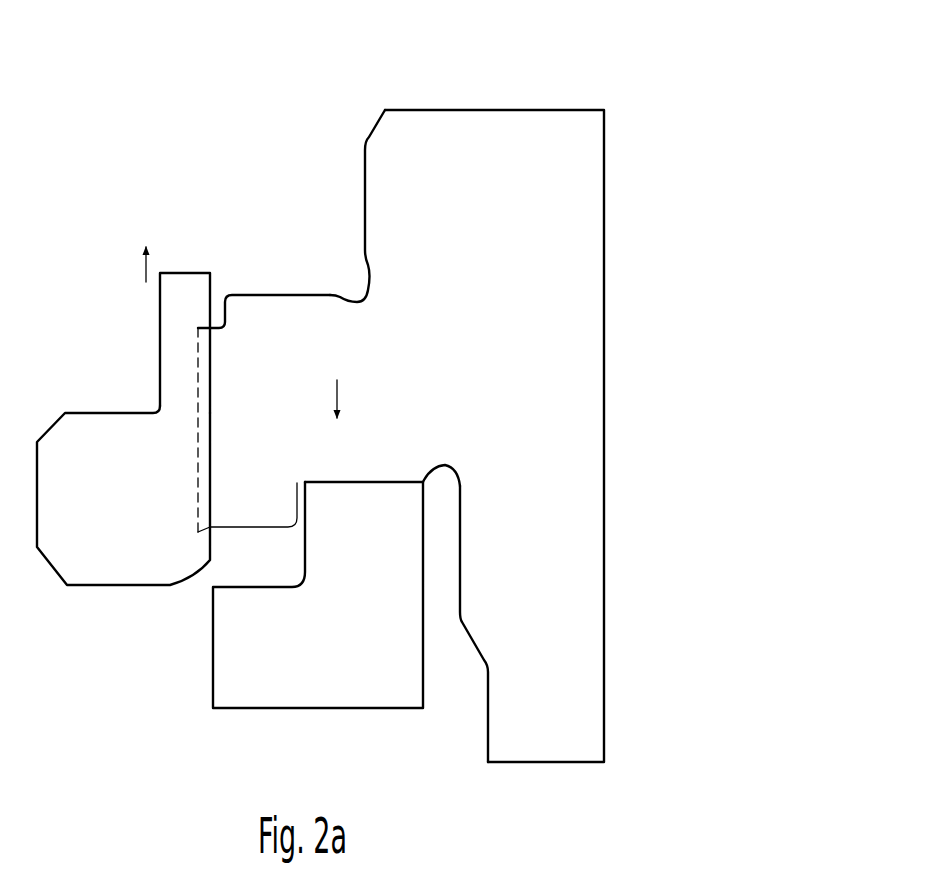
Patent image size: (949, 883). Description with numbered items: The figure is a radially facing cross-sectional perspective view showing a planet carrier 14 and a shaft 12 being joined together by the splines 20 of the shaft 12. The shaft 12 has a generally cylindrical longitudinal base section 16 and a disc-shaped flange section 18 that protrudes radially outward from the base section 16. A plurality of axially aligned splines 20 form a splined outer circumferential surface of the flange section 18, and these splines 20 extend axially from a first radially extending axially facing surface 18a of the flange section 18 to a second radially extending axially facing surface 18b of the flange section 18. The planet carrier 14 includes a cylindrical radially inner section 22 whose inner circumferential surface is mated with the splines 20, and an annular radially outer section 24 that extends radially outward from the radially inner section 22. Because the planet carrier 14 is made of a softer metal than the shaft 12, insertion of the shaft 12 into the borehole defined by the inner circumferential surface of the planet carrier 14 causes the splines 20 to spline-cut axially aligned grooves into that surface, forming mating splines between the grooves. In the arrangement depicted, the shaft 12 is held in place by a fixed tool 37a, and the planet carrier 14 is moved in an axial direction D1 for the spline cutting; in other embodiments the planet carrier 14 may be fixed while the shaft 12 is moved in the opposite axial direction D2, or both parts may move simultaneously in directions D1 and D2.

The shaft 12 is at (370, 403).
The planet carrier 14 is at (123, 485).
The longitudinal base section 16 is at (478, 655).
The flange section 18 is at (291, 321).
The first radially extending axially facing surface 18a is at (277, 524).
The second radially extending axially facing surface 18b is at (278, 293).
The splines 20 is at (200, 488).
The cylindrical radially inner section 22 is at (176, 354).
The annular radially outer section 24 is at (95, 432).
The fixed tool 37a is at (262, 688).
The axial direction D1 is at (146, 268).
The axial direction D2 is at (337, 392).